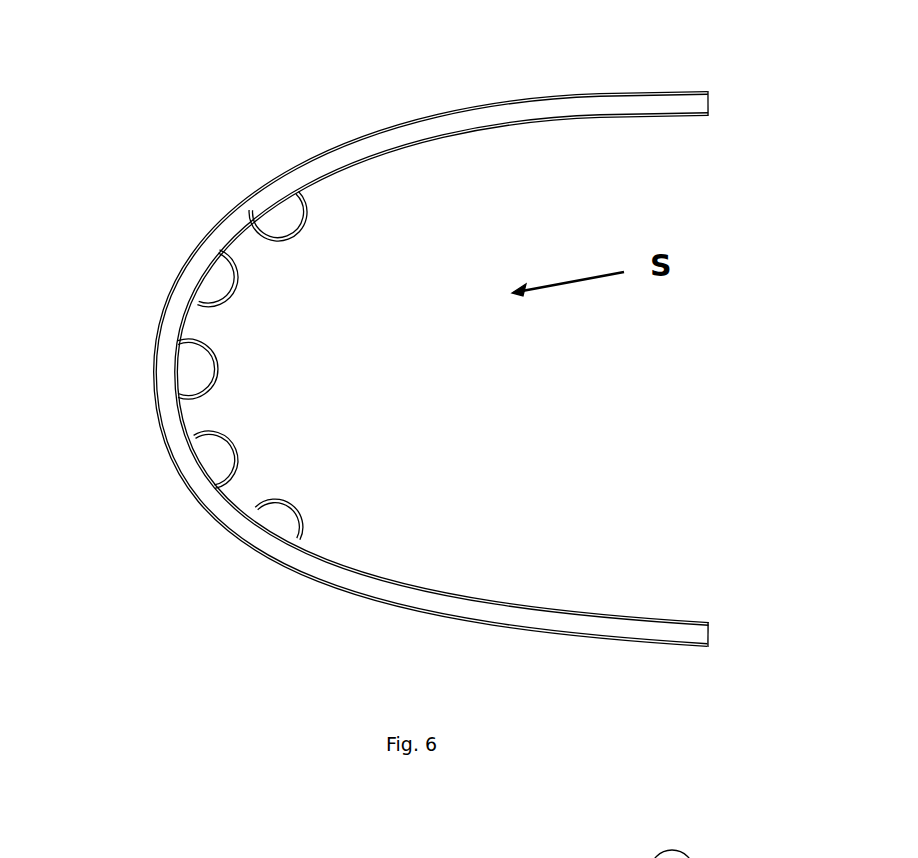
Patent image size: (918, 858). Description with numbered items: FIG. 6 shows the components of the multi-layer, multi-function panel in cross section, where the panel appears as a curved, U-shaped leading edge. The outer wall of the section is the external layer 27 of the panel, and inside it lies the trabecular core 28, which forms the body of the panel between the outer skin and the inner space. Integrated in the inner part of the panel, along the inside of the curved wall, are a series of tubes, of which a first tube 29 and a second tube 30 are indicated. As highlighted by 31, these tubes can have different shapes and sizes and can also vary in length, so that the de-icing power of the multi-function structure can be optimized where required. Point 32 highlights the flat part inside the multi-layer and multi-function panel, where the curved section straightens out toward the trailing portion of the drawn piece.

The external layer 27 is at (693, 88).
The trabecular core 28 is at (441, 128).
The first tube 29 is at (287, 195).
The second tube 30 is at (195, 292).
The tube of different shape and size 31 is at (218, 356).
The flat part 32 is at (370, 577).